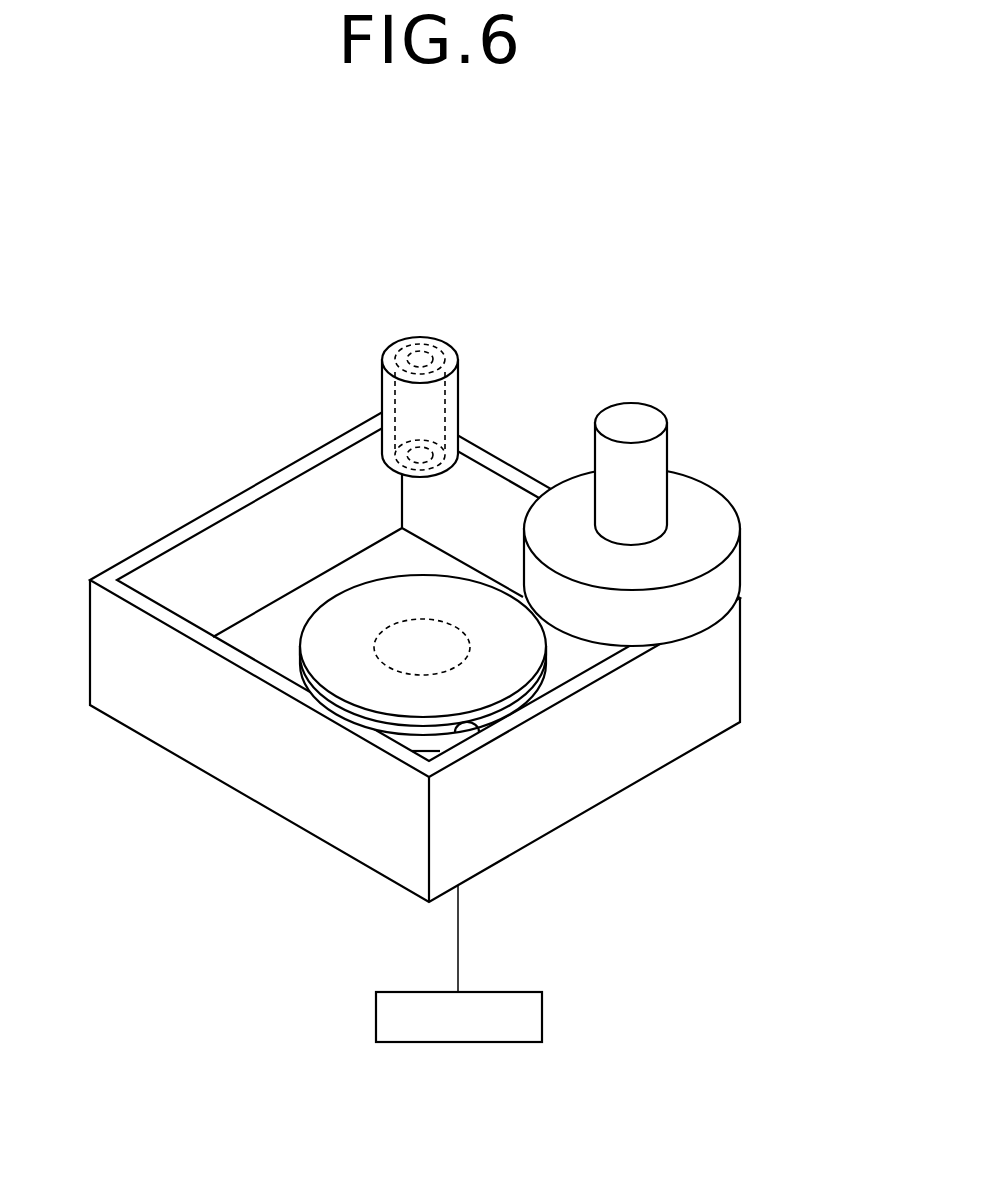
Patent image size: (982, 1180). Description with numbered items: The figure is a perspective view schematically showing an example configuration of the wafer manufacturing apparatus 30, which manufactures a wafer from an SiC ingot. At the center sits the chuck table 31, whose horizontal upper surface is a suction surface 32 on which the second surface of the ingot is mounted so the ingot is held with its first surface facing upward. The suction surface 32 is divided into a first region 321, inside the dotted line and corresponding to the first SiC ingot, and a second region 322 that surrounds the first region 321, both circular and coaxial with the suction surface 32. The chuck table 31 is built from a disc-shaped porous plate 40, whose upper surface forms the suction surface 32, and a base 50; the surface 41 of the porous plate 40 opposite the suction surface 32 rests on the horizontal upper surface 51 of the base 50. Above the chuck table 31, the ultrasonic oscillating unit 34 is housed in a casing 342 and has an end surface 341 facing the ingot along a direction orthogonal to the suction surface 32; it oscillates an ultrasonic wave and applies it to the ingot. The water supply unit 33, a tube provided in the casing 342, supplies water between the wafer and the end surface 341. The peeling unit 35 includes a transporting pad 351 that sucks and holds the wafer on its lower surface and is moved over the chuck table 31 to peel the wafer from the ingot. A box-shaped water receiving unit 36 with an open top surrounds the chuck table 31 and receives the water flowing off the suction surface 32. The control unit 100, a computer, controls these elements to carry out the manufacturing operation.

The wafer manufacturing apparatus 30 is at (446, 359).
The chuck table 31 is at (470, 583).
The suction surface 32 is at (397, 520).
The first region 321 is at (425, 640).
The second region 322 is at (387, 597).
The water supply unit 33 is at (395, 345).
The ultrasonic oscillating unit 34 is at (430, 346).
The end surface 341 is at (423, 468).
The casing 342 is at (458, 410).
The peeling unit 35 is at (674, 524).
The transporting pad 351 is at (742, 563).
The water receiving unit 36 is at (86, 605).
The porous plate 40 is at (484, 564).
The surface 41 is at (425, 733).
The base 50 is at (548, 680).
The upper surface 51 is at (480, 733).
The control unit 100 is at (542, 1003).